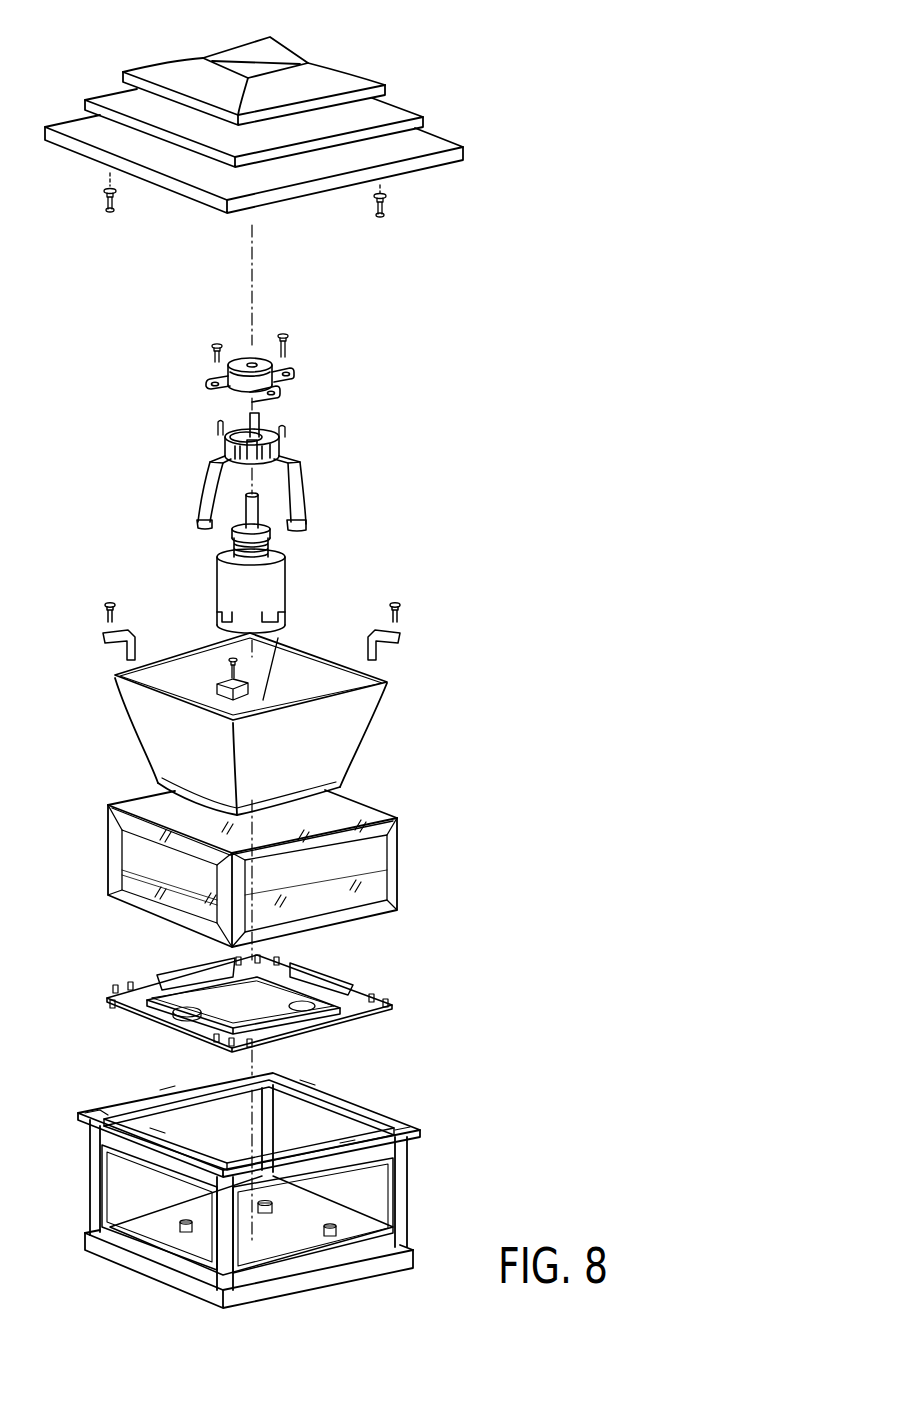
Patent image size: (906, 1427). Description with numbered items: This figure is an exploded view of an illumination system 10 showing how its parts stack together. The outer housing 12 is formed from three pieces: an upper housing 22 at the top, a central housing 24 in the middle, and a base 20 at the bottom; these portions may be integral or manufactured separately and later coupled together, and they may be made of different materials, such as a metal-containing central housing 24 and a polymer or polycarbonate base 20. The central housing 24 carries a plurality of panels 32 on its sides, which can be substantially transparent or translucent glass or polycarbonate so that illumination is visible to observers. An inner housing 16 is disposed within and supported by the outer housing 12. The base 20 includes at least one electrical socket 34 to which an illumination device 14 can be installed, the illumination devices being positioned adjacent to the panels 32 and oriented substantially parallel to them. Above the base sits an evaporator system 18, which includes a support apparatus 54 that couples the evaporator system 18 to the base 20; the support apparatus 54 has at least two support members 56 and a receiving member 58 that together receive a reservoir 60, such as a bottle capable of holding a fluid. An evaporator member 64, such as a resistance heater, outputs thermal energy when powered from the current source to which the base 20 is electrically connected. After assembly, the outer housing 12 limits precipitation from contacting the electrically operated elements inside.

The illumination system 10 is at (513, 92).
The upper housing 22 is at (226, 60).
The evaporator member 64 is at (262, 357).
The evaporator system 18 is at (192, 458).
The receiving member 58 is at (262, 428).
The support apparatus 54 is at (288, 456).
The support members 56 is at (210, 497).
The reservoir 60 is at (280, 580).
The inner housing 16 is at (357, 742).
The panels 32 is at (347, 807).
The electrical socket 34 is at (325, 982).
The illumination device 14 is at (317, 995).
The base 20 is at (383, 1010).
The central housing 24 is at (403, 1193).
The outer housing 12 is at (97, 1253).